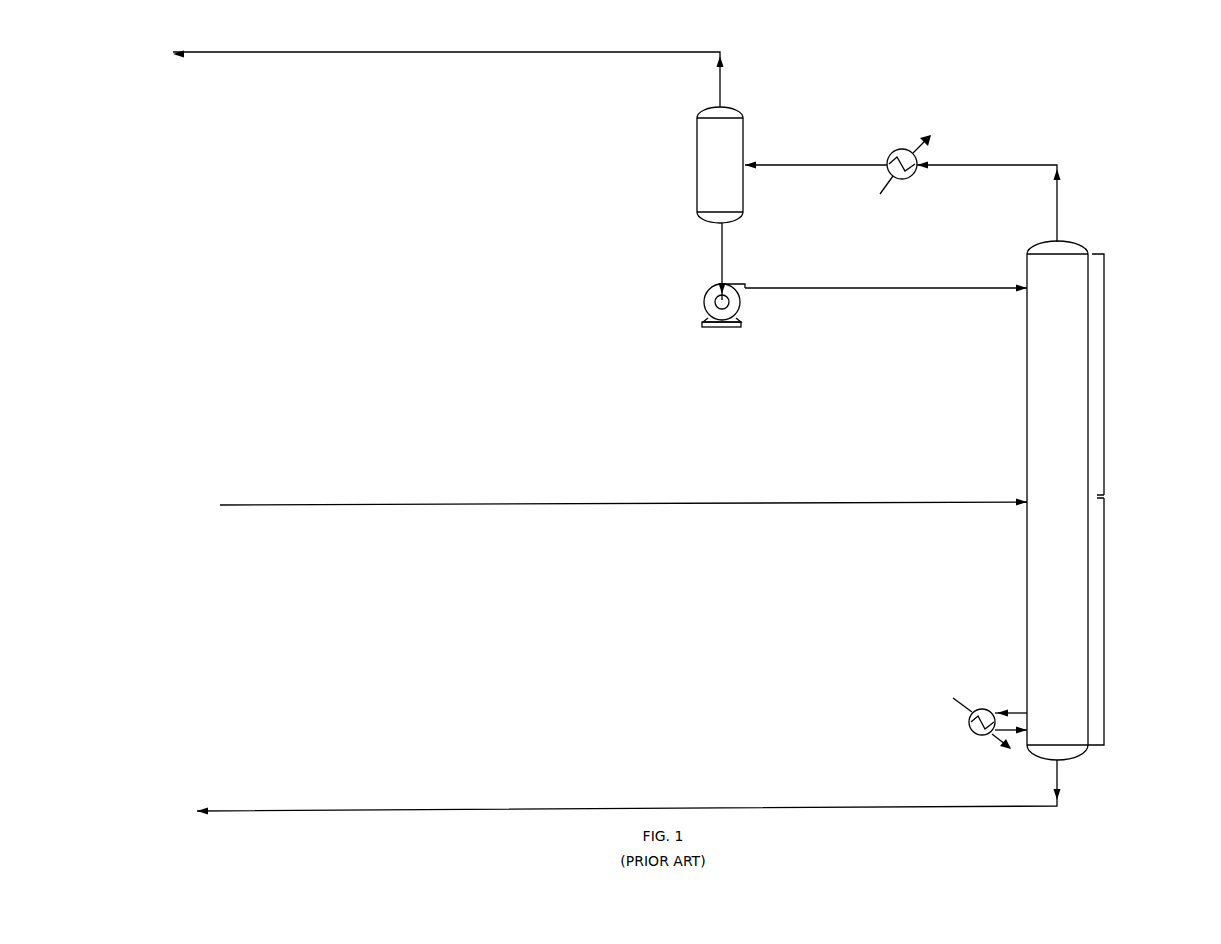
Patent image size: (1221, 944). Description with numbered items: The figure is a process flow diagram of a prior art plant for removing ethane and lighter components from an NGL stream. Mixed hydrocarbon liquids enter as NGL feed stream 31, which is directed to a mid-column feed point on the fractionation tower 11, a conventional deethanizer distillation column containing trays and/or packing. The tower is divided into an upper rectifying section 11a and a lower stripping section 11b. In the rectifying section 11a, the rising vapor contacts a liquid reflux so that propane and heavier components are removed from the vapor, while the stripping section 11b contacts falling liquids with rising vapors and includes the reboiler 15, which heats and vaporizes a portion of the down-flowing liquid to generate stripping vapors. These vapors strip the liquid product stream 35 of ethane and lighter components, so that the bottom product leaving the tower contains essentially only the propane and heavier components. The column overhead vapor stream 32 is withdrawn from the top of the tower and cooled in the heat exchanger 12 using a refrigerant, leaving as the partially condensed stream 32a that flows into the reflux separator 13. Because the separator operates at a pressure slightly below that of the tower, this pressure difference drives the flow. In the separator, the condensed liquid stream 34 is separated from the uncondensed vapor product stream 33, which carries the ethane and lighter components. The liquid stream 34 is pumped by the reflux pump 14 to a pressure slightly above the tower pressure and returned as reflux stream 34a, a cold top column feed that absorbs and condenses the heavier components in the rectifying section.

The fractionation tower 11 is at (1027, 378).
The upper rectifying section 11a is at (1105, 378).
The lower stripping section 11b is at (1105, 622).
The heat exchanger 12 is at (913, 176).
The reflux separator 13 is at (697, 167).
The reflux pump 14 is at (711, 291).
The reboiler 15 is at (968, 722).
The NGL feed stream 31 is at (298, 507).
The column overhead vapor stream 32 is at (995, 167).
The partially condensed overhead stream 32a is at (803, 167).
The vapor product stream 33 is at (293, 57).
The condensed liquid stream 34 is at (724, 249).
The reflux stream 34a is at (873, 290).
The liquid product stream 35 is at (299, 812).